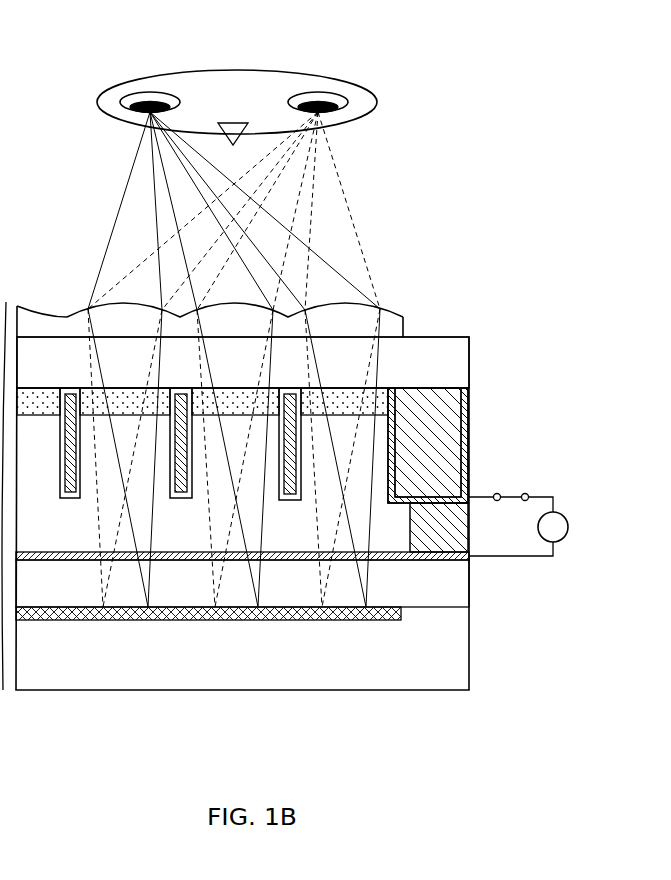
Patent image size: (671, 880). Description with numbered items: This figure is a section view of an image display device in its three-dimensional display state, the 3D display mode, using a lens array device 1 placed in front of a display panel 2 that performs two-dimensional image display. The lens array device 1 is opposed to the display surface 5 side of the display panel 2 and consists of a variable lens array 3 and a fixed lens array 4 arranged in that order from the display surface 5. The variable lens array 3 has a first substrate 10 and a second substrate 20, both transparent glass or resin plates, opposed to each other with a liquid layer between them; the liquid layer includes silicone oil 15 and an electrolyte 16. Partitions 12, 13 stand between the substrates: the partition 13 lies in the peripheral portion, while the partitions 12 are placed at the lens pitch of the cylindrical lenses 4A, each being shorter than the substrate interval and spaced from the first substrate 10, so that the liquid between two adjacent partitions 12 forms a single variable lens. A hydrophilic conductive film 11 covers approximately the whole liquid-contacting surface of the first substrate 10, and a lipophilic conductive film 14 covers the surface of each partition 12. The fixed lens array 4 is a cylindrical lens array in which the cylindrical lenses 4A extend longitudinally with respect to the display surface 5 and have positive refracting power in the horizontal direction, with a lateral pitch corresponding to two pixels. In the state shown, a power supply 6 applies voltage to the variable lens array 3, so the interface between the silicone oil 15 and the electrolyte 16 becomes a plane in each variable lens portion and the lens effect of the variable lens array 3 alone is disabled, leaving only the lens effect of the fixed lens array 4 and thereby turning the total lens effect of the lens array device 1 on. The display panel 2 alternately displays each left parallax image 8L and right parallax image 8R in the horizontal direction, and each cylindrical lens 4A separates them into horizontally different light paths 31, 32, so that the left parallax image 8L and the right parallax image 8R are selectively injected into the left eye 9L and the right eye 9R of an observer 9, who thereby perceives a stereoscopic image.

The lens array device 1 is at (625, 603).
The display panel 2 is at (587, 612).
The variable lens array 3 is at (587, 343).
The three-dimensional display mode 3D is at (234, 49).
The fixed lens array 4 is at (250, 310).
The cylindrical lens 4A is at (377, 302).
The display surface 5 is at (430, 620).
The power supply 6 is at (568, 501).
The left parallax image 8L is at (320, 620).
The right parallax image 8R is at (375, 620).
The observer 9 is at (283, 72).
The left eye 9L is at (378, 102).
The right eye 9R is at (97, 102).
The first substrate 10 is at (463, 595).
The hydrophilic conductive film 11 is at (465, 562).
The partition 12 is at (300, 443).
The partition 13 is at (463, 537).
The lipophilic conductive film 14 is at (300, 423).
The silicone oil 15 is at (467, 403).
The electrolyte 16 is at (385, 470).
The second substrate 20 is at (466, 363).
The light path 31 is at (118, 206).
The light path 32 is at (348, 207).